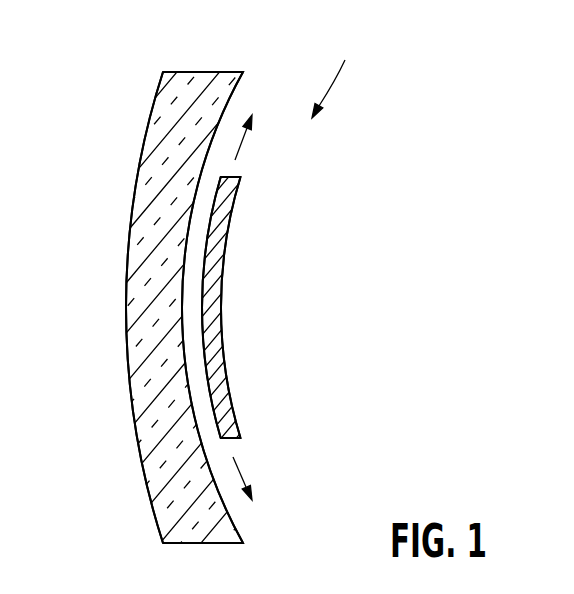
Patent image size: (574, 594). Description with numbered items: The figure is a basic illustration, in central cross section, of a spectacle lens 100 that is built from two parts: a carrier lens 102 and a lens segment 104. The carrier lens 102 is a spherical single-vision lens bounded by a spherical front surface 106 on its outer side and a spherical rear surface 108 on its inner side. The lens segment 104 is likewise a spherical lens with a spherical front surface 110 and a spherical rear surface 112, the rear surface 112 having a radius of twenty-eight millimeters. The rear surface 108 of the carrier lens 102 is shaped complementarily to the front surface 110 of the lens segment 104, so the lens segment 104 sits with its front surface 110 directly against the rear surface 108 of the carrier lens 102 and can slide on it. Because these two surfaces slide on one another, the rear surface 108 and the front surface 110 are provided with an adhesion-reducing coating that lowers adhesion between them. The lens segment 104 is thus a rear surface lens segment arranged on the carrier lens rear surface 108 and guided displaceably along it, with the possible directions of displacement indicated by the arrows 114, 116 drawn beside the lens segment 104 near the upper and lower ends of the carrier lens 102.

The spectacle lens 100 is at (341, 75).
The carrier lens 102 is at (192, 84).
The lens segment 104 is at (217, 345).
The front surface 106 is at (127, 332).
The rear surface 108 is at (233, 518).
The front surface 110 is at (210, 393).
The rear surface 112 is at (222, 255).
The arrow 114 is at (240, 475).
The arrow 116 is at (238, 146).